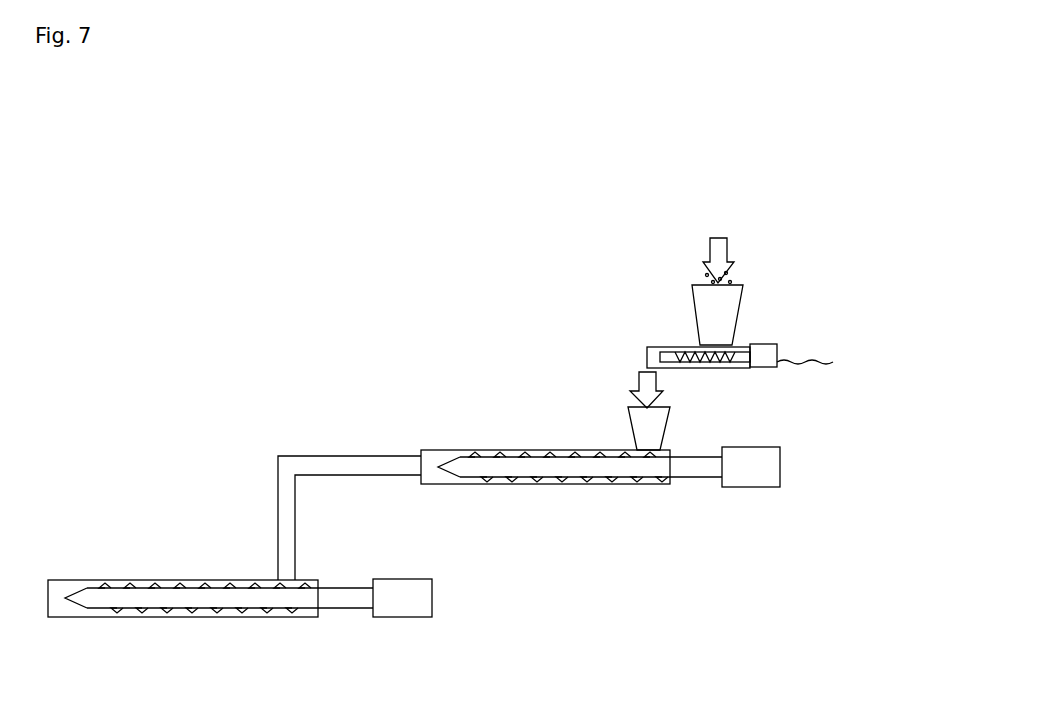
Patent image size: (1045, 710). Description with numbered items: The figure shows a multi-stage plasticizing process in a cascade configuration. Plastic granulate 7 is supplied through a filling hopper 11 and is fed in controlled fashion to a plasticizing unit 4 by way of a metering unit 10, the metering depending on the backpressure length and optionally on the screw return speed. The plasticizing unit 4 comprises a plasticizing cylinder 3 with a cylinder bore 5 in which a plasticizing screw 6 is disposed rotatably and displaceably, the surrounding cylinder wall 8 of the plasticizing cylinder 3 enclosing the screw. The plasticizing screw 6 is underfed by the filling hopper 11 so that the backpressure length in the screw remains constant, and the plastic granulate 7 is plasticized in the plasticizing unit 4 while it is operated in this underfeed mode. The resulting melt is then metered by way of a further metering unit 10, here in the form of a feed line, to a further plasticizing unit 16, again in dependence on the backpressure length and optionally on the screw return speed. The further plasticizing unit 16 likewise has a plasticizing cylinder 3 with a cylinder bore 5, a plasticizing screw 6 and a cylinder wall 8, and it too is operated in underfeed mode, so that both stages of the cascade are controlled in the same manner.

The plasticizing cylinder 3 is at (445, 452).
The plasticizing unit 4 is at (492, 415).
The cylinder bore 5 is at (665, 452).
The plasticizing screw 6 is at (548, 470).
The plastic granulate 7 is at (730, 272).
The cylinder wall 8 is at (490, 497).
The metering unit 10 is at (642, 322).
The filling hopper 11 is at (695, 291).
The further plasticizing unit 16 is at (155, 556).